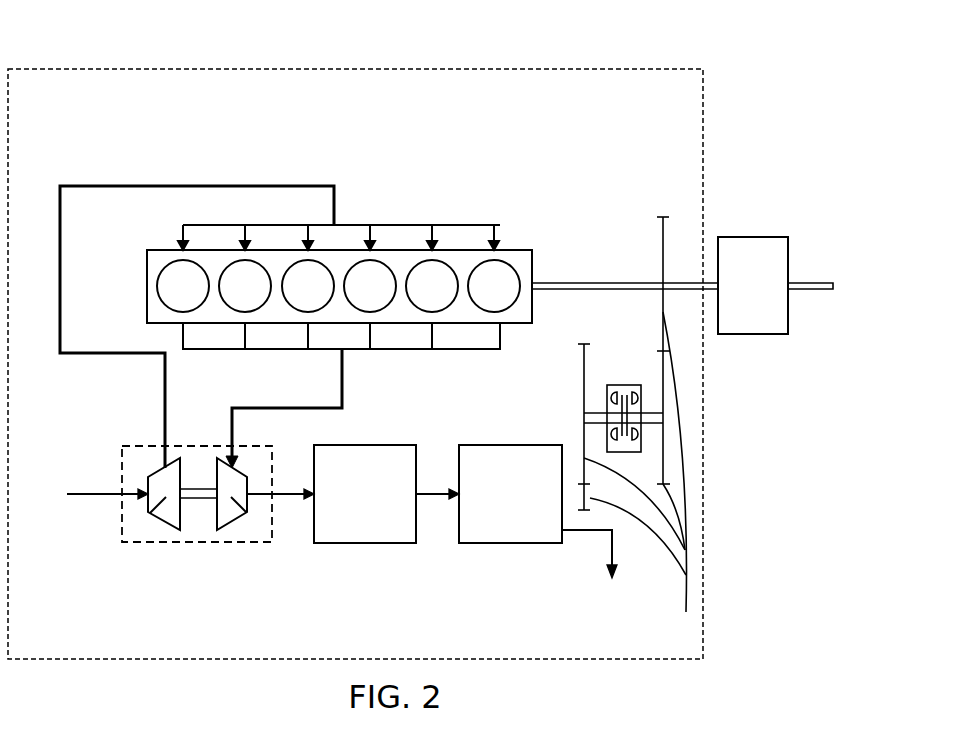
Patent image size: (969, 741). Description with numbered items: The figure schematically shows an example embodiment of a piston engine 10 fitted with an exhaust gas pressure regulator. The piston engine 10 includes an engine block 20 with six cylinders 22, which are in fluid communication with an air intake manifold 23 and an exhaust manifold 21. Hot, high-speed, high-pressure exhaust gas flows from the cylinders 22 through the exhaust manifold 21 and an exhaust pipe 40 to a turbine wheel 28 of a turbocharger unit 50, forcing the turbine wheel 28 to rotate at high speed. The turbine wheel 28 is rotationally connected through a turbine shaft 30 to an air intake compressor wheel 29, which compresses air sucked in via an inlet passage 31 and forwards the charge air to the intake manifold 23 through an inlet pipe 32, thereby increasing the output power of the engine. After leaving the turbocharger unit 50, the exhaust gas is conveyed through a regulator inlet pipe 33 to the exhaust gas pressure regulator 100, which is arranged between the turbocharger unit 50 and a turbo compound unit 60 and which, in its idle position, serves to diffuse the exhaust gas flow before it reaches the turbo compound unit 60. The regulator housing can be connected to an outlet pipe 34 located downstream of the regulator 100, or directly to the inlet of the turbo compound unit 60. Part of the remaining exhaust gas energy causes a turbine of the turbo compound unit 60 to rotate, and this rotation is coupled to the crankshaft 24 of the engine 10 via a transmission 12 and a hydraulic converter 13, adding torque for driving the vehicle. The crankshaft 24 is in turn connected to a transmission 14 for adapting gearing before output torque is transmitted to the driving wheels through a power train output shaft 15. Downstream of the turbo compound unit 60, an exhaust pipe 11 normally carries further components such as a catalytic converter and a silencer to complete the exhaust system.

The piston engine 10 is at (703, 103).
The exhaust pipe 11 is at (584, 533).
The transmission 12 is at (639, 434).
The hydraulic converter 13 is at (619, 385).
The transmission 14 is at (747, 278).
The power train output shaft 15 is at (827, 283).
The engine block 20 is at (520, 316).
The exhaust manifold 21 is at (467, 350).
The cylinders 22 is at (338, 286).
The air intake manifold 23 is at (395, 225).
The crankshaft 24 is at (560, 283).
The turbine wheel 28 is at (247, 505).
The air intake compressor wheel 29 is at (163, 497).
The turbine shaft 30 is at (199, 498).
The inlet passage 31 is at (95, 494).
The inlet pipe 32 is at (122, 185).
The regulator inlet pipe 33 is at (289, 495).
The outlet pipe 34 is at (432, 500).
The exhaust pipe 40 is at (343, 398).
The turbocharger unit 50 is at (213, 542).
The turbo compound unit 60 is at (503, 543).
The exhaust gas pressure regulator 100 is at (390, 543).